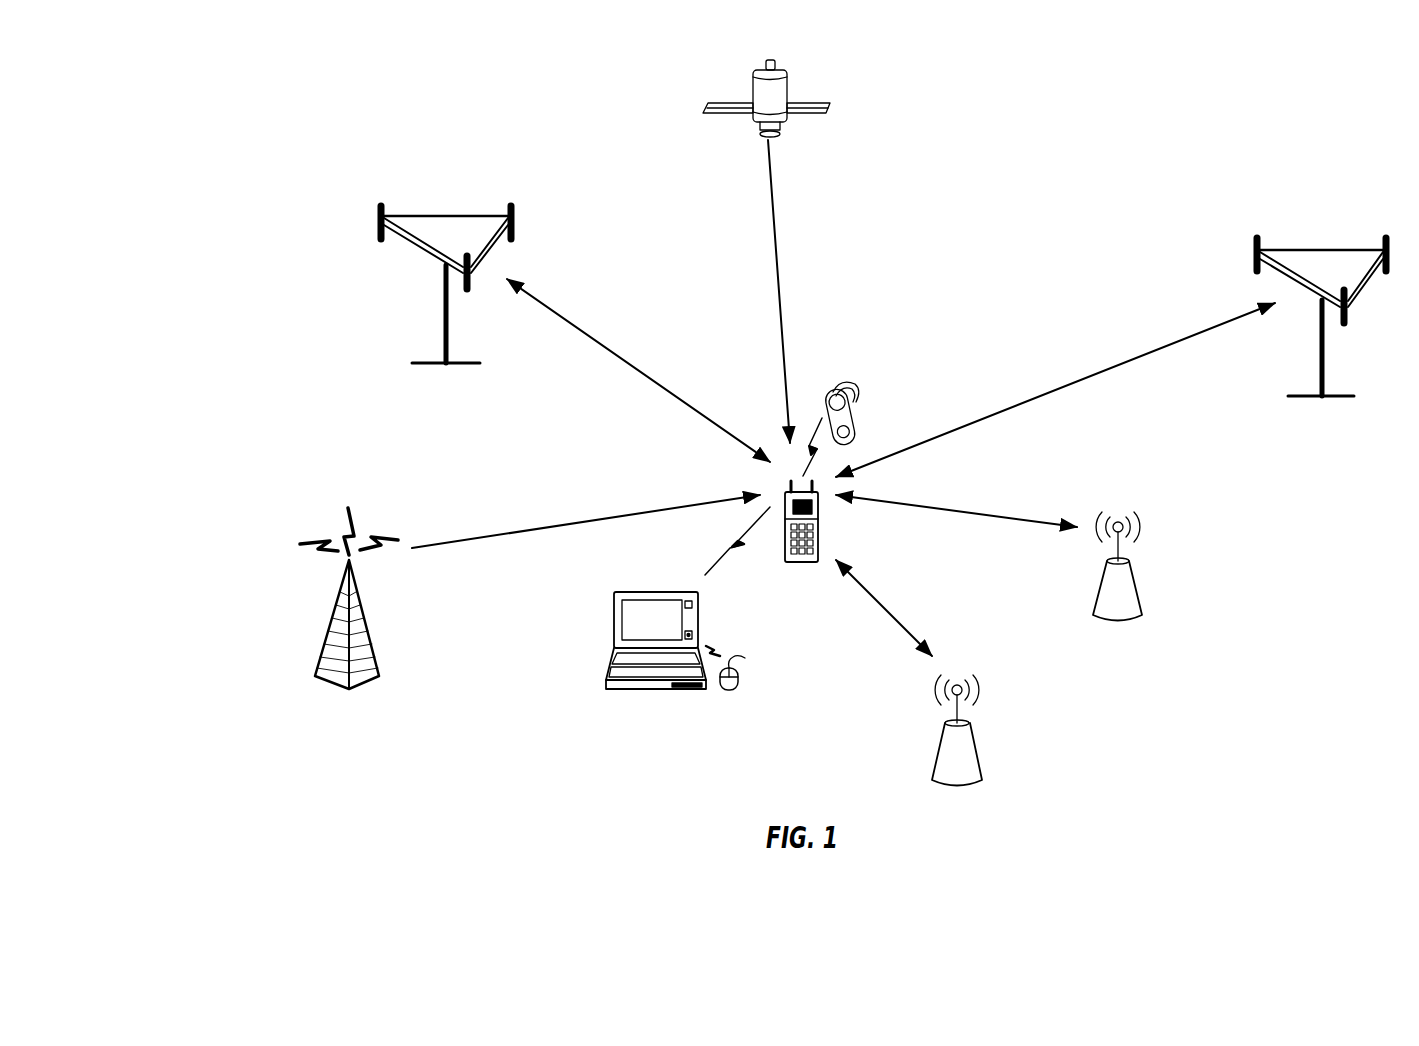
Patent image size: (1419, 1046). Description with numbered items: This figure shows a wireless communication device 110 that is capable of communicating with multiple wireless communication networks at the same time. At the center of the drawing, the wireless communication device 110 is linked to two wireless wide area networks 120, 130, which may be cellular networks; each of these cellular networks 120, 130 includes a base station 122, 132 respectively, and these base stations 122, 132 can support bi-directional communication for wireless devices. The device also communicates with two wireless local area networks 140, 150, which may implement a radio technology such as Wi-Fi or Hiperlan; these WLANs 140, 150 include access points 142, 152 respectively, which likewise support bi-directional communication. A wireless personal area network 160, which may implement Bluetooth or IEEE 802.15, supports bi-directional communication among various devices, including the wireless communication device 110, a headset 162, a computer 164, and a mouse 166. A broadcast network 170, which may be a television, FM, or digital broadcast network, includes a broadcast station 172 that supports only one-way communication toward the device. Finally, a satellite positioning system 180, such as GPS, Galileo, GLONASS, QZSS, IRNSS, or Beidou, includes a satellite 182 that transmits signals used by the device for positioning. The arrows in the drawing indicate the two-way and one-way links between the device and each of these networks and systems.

The wireless communication device 110 is at (819, 527).
The wireless wide area network 120 is at (394, 273).
The base station 122 is at (440, 214).
The wireless wide area network 130 is at (1252, 306).
The base station 132 is at (1317, 248).
The wireless local area network 140 is at (1026, 730).
The access point 142 is at (979, 755).
The wireless local area network 150 is at (1187, 566).
The access point 152 is at (1140, 592).
The wireless personal area network 160 is at (877, 397).
The headset 162 is at (829, 386).
The computer 164 is at (651, 591).
The mouse 166 is at (739, 663).
The broadcast network 170 is at (285, 598).
The broadcast station 172 is at (366, 634).
The satellite positioning system 180 is at (847, 110).
The satellite 182 is at (814, 100).